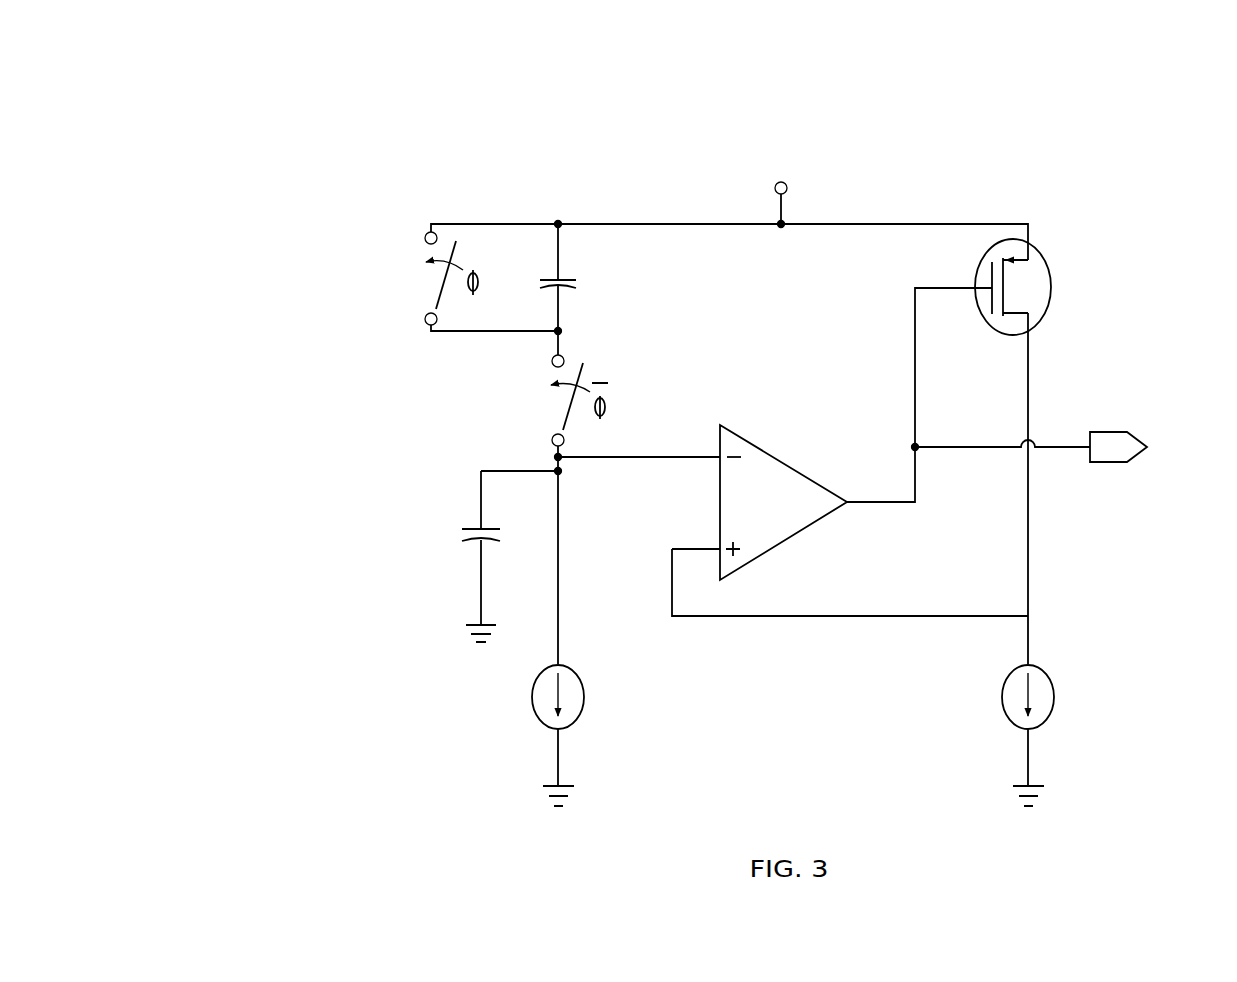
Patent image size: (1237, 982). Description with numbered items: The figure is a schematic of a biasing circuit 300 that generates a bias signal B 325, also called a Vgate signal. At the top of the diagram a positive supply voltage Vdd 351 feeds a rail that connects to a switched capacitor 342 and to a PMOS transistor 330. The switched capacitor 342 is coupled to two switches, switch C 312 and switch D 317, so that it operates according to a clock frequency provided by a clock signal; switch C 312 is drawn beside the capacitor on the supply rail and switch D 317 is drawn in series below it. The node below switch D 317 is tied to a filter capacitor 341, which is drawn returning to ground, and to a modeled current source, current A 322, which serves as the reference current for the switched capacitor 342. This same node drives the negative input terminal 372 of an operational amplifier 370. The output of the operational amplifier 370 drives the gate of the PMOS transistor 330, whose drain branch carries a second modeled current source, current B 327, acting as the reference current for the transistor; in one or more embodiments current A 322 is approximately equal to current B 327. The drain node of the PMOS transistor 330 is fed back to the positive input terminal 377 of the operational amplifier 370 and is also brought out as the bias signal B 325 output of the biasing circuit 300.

The biasing circuit 300 is at (348, 138).
The switch C 312 is at (432, 290).
The switch D 317 is at (560, 411).
The current A 322 is at (531, 710).
The bias signal B 325 is at (1130, 428).
The current B 327 is at (1056, 710).
The PMOS transistor 330 is at (1054, 296).
The filter capacitor 341 is at (458, 539).
The switched capacitor 342 is at (575, 293).
The positive supply voltage (Vdd) 351 is at (791, 181).
The operational amplifier 370 is at (792, 549).
The negative input terminal 372 is at (712, 452).
The positive input terminal 377 is at (717, 560).